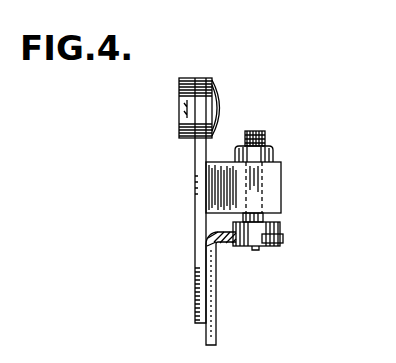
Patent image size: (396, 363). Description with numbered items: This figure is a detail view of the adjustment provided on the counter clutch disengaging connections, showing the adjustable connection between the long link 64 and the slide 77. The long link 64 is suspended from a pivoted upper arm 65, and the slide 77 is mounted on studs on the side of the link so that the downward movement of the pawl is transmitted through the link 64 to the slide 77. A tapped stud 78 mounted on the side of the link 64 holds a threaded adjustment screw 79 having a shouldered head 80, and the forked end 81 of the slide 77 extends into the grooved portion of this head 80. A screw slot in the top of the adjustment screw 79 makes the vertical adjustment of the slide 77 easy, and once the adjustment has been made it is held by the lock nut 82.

The long link 64 is at (195, 292).
The upper arm 65 is at (190, 77).
The slide 77 is at (217, 292).
The tapped stud 78 is at (281, 183).
The threaded adjustment screw 79 is at (265, 136).
The shouldered head 80 is at (280, 247).
The forked end 81 is at (283, 238).
The lock nut 82 is at (273, 151).